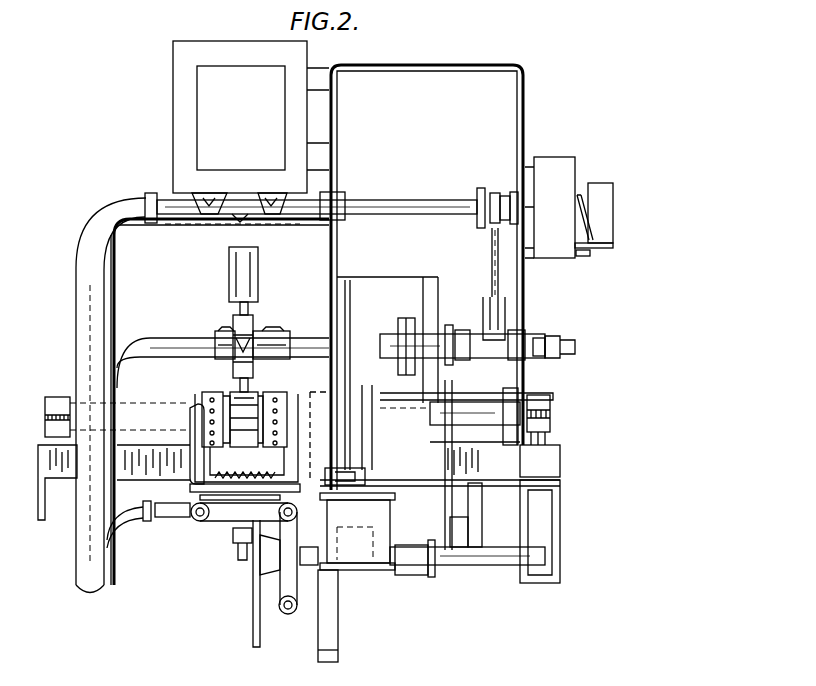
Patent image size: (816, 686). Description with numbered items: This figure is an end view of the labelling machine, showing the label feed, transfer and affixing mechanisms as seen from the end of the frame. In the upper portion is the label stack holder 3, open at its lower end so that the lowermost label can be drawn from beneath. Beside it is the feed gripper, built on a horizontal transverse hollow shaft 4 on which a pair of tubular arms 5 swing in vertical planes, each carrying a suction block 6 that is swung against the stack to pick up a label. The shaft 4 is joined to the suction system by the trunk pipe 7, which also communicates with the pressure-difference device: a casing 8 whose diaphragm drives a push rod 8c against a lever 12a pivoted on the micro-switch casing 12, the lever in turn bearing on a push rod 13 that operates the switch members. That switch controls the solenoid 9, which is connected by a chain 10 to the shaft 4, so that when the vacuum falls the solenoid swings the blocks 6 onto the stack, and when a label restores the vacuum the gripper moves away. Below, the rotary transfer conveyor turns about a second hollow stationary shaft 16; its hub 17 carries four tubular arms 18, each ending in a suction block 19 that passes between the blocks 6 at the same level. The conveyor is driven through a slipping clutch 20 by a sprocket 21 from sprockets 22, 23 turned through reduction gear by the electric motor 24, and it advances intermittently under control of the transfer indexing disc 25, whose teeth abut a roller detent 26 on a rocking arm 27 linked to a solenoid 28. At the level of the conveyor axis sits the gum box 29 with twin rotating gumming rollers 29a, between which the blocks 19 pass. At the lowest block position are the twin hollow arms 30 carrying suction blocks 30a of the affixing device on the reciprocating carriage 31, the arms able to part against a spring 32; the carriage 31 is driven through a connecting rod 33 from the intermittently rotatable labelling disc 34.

The label stack holder 3 is at (190, 79).
The horizontal transverse hollow shaft 4 is at (367, 203).
The tubular arms 5 is at (244, 216).
The suction block 6 is at (200, 214).
The trunk pipe 7 is at (90, 346).
The casing 8 is at (553, 165).
The push rod 8c is at (578, 257).
The solenoid 9 is at (552, 430).
The chain 10 is at (480, 195).
The micro-switch casing 12 is at (603, 190).
The lever 12a is at (578, 195).
The push rod 13 is at (586, 249).
The horizontal hollow stationary shaft 16 is at (168, 350).
The hub 17 is at (243, 331).
The tubular arms 18 is at (250, 309).
The suction block 19 is at (233, 264).
The slipping clutch 20 is at (404, 322).
The sprocket 21 is at (455, 329).
The sprocket 22 is at (445, 562).
The sprocket 23 is at (480, 545).
The electric motor 24 is at (380, 277).
The transfer indexing disc 25 is at (349, 300).
The roller detent 26 is at (366, 420).
The rocking arm 27 is at (356, 459).
The solenoid 28 is at (278, 347).
The gum box 29 is at (212, 340).
The gumming rollers 29a is at (222, 333).
The horizontal hollow arms 30 is at (198, 413).
The suction blocks 30a is at (203, 433).
The reciprocating carriage 31 is at (240, 523).
The spring 32 is at (200, 462).
The connecting rod 33 is at (233, 555).
The indexing disc 34 is at (253, 580).